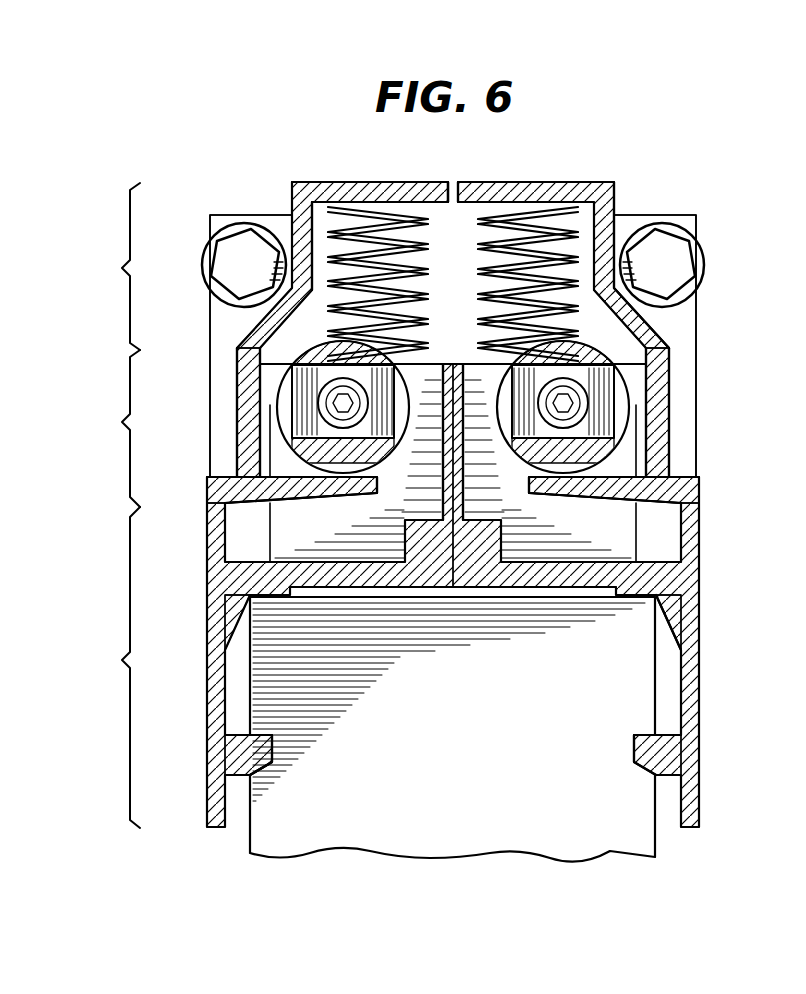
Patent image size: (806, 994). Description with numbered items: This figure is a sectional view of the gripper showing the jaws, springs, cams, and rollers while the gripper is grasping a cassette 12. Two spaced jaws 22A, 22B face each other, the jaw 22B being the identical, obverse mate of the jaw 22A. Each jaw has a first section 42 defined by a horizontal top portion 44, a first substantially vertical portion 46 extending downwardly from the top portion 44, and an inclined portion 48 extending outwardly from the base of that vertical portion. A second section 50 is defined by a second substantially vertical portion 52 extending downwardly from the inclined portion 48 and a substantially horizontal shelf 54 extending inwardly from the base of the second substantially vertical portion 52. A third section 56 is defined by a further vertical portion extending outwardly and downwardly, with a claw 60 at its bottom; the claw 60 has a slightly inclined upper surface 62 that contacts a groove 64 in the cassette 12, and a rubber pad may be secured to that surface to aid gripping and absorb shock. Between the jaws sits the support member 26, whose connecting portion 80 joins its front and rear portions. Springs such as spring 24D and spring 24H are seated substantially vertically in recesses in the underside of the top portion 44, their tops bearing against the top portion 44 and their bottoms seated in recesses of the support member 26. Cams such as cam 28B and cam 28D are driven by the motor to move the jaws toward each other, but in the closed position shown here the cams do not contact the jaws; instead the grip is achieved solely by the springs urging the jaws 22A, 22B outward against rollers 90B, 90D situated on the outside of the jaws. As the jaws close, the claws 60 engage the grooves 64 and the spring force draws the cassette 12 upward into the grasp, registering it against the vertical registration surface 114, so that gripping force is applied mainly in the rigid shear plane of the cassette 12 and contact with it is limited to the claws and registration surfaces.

The cassette 12 is at (452, 729).
The jaw 22A is at (340, 178).
The jaw 22B is at (577, 178).
The spring 24D is at (320, 181).
The spring 24H is at (618, 220).
The support member 26 is at (650, 560).
The cam 28B is at (292, 372).
The cam 28D is at (598, 455).
The first section 42 is at (113, 266).
The horizontal top portion 44 is at (427, 183).
The first substantially vertical portion 46 is at (306, 222).
The inclined portion 48 is at (235, 320).
The second section 50 is at (113, 428).
The second substantially vertical portion 52 is at (243, 457).
The substantially horizontal shelf 54 is at (306, 487).
The third section 56 is at (112, 667).
The claw 60 is at (255, 765).
The slightly inclined upper surface 62 is at (238, 738).
The groove 64 is at (645, 757).
The connecting portion 80 is at (453, 363).
The roller 90B is at (198, 264).
The roller 90D is at (706, 262).
The vertical registration surface 114 is at (637, 600).